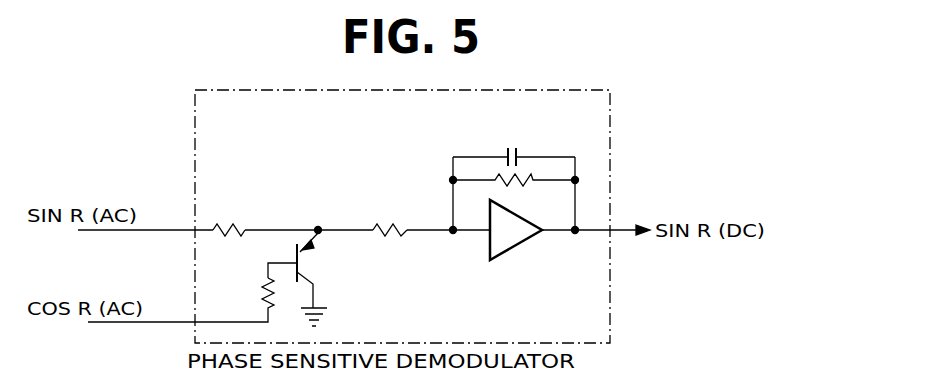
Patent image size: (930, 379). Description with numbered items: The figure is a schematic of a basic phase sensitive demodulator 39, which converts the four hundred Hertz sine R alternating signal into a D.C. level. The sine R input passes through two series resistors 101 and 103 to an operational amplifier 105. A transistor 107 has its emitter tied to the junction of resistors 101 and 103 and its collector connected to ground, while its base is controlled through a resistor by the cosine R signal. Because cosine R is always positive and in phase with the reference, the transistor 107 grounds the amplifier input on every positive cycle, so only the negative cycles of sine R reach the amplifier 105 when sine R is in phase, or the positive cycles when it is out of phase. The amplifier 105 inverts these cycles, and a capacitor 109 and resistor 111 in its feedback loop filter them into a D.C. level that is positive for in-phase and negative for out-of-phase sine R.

The phase sensitive demodulator 39 is at (276, 90).
The resistor 101 is at (225, 224).
The resistor 103 is at (397, 224).
The operational amplifier 105 is at (510, 250).
The transistor 107 is at (308, 270).
The capacitor 109 is at (516, 149).
The resistor 111 is at (516, 186).